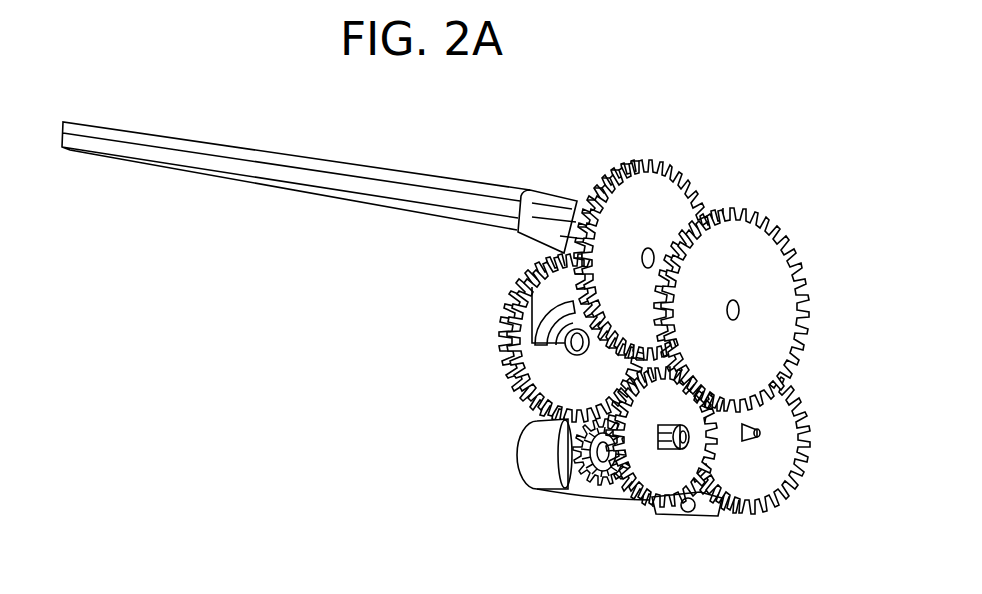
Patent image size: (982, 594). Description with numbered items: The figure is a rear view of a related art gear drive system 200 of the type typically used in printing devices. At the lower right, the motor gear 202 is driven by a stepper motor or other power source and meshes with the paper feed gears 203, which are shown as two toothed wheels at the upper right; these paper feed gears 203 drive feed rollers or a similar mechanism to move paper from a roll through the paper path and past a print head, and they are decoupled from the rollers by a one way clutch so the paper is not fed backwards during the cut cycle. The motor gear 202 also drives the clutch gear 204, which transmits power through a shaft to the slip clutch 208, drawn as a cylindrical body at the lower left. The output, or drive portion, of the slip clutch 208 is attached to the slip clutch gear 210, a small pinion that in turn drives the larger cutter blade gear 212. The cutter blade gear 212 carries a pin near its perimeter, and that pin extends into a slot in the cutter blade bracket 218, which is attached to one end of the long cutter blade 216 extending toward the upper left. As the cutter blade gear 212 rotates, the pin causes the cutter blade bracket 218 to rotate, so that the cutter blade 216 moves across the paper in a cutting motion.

The gear drive system 200 is at (319, 183).
The motor gear 202 is at (774, 430).
The paper feed gears 203 is at (763, 256).
The clutch gear 204 is at (649, 464).
The slip clutch 208 is at (516, 451).
The slip clutch gear 210 is at (568, 487).
The cutter blade gear 212 is at (562, 370).
The cutter blade 216 is at (229, 186).
The cutter blade bracket 218 is at (523, 248).